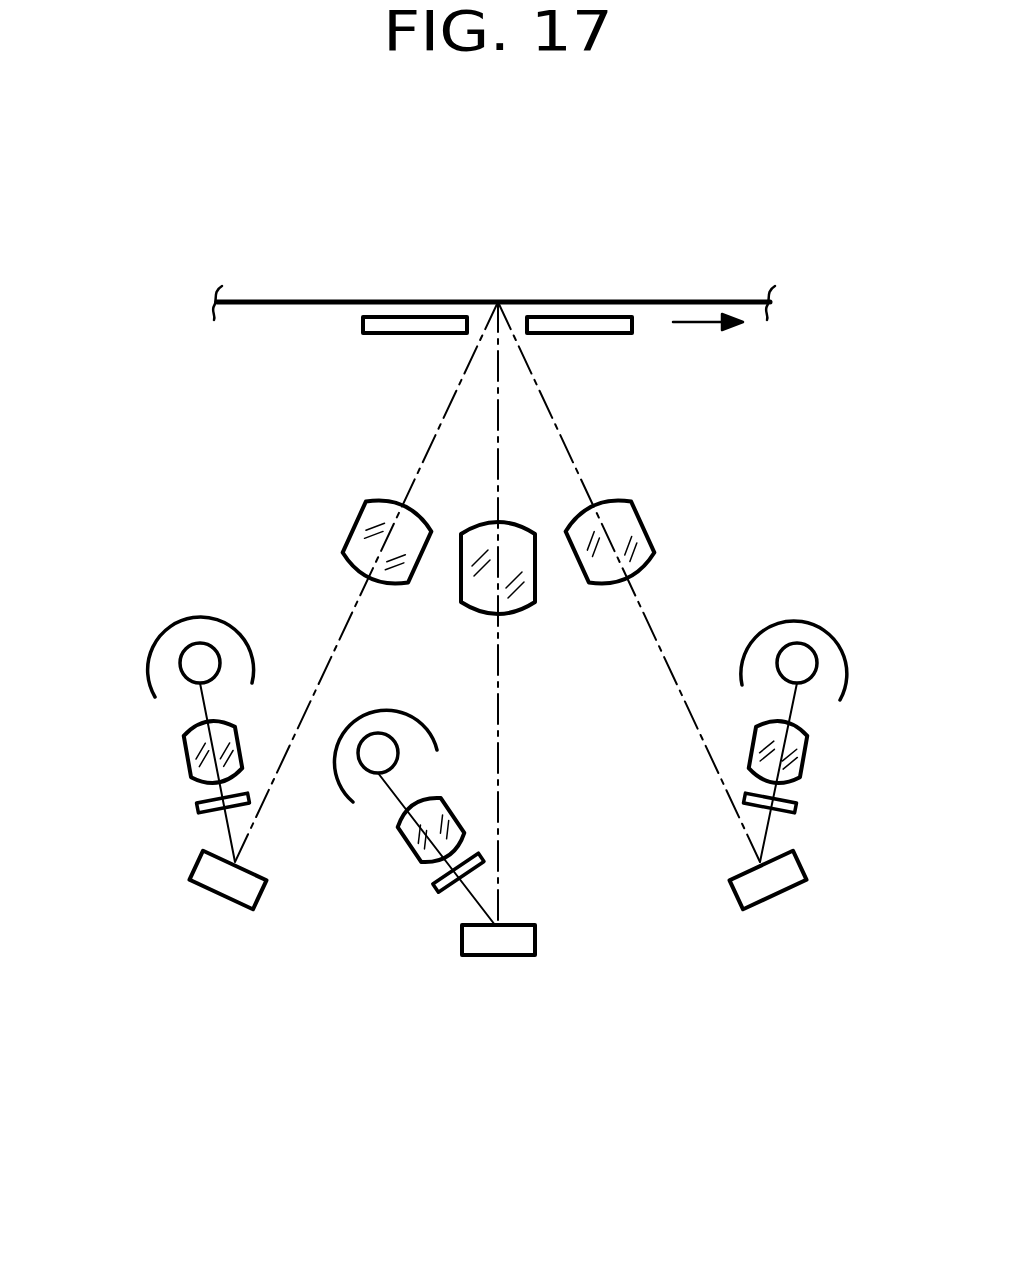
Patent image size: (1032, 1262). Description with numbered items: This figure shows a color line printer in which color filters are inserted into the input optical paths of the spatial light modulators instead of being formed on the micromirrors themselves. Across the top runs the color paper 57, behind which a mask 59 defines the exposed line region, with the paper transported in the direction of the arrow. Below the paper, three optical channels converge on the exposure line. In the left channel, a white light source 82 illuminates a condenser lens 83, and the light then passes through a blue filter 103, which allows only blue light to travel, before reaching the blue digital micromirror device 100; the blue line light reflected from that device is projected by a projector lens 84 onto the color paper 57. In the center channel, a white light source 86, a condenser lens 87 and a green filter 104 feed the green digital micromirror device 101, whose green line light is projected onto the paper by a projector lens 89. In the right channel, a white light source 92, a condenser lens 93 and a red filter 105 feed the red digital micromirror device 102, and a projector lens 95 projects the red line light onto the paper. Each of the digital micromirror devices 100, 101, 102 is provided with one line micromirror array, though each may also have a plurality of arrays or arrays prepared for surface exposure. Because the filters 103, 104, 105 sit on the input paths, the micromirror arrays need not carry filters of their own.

The color paper 57 is at (343, 300).
The mask 59 is at (412, 334).
The white light source 82 is at (200, 644).
The condenser lens 83 is at (186, 754).
The projector lens 84 is at (346, 534).
The white light source 86 is at (381, 735).
The condenser lens 87 is at (411, 858).
The projector lens 89 is at (520, 616).
The white light source 92 is at (797, 644).
The condenser lens 93 is at (808, 750).
The projector lens 95 is at (650, 522).
The blue digital micromirror device 100 is at (230, 892).
The green digital micromirror device 101 is at (500, 957).
The red digital micromirror device 102 is at (766, 892).
The blue filter 103 is at (199, 809).
The green filter 104 is at (447, 890).
The red filter 105 is at (796, 809).